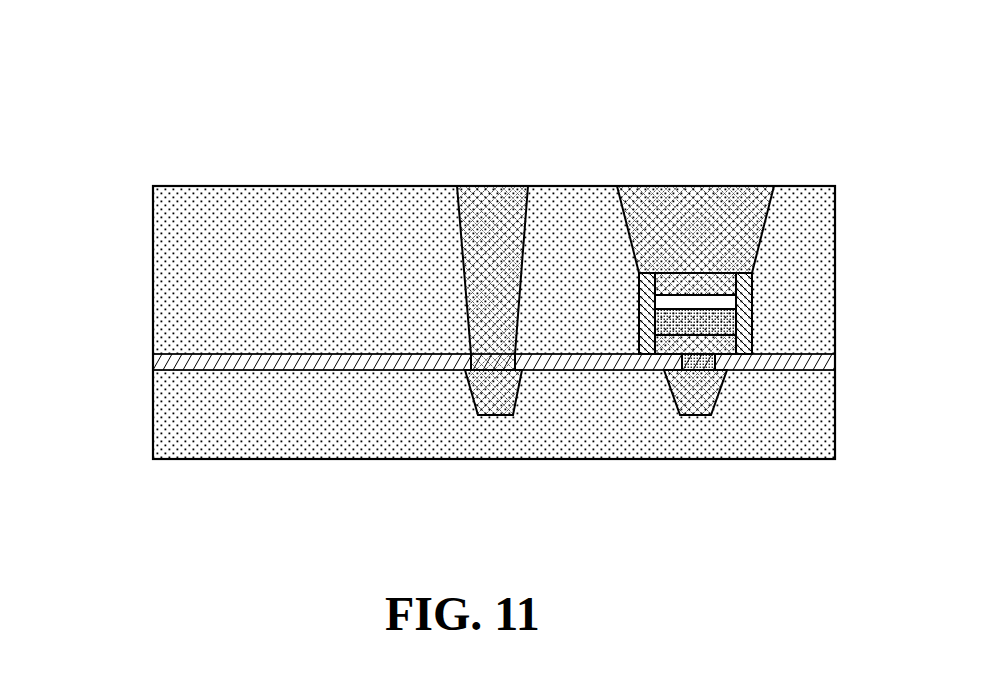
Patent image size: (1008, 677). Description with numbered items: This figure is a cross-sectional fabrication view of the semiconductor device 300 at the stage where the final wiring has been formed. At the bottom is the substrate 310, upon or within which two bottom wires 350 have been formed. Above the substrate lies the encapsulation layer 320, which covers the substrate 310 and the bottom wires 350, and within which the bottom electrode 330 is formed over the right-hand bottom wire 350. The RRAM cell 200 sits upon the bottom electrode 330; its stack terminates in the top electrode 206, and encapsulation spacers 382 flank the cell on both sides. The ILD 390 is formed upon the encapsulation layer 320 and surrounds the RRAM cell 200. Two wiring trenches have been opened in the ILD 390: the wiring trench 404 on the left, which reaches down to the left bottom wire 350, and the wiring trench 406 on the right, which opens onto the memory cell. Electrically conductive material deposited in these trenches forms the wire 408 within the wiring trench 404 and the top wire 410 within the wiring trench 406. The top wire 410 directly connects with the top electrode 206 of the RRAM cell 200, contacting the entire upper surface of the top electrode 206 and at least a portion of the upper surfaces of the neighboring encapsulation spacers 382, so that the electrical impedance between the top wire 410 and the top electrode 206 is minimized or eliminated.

The semiconductor device 300 is at (435, 280).
The ILD 390 is at (193, 277).
The encapsulation layer 320 is at (162, 363).
The substrate 310 is at (180, 418).
The wiring trench 404 is at (452, 203).
The wire 408 is at (487, 203).
The wiring trench 406 is at (719, 271).
The top wire 410 is at (737, 205).
The top electrode 206 is at (692, 282).
The RRAM cell 200 is at (719, 324).
The encapsulation spacer 382 is at (647, 315).
The bottom electrode 330 is at (697, 362).
The bottom wire 350 is at (490, 383).